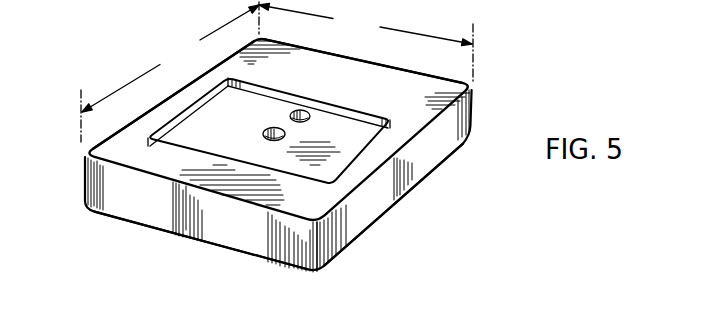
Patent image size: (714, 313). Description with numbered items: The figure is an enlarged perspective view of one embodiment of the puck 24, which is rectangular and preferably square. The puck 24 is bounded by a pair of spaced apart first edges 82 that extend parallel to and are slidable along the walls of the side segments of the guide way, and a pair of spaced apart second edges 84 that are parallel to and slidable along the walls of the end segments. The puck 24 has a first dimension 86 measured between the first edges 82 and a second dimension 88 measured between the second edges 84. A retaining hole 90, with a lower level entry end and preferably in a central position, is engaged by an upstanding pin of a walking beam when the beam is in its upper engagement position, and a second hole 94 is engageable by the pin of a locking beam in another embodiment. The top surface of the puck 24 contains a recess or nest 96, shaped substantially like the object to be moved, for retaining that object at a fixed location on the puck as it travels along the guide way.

The puck 24 is at (376, 99).
The first edges 82 is at (403, 70).
The second edges 84 is at (130, 117).
The first dimension 86 is at (170, 73).
The second dimension 88 is at (366, 42).
The retaining hole 90 is at (310, 118).
The second hole 94 is at (280, 140).
The recess or nest 96 is at (190, 141).